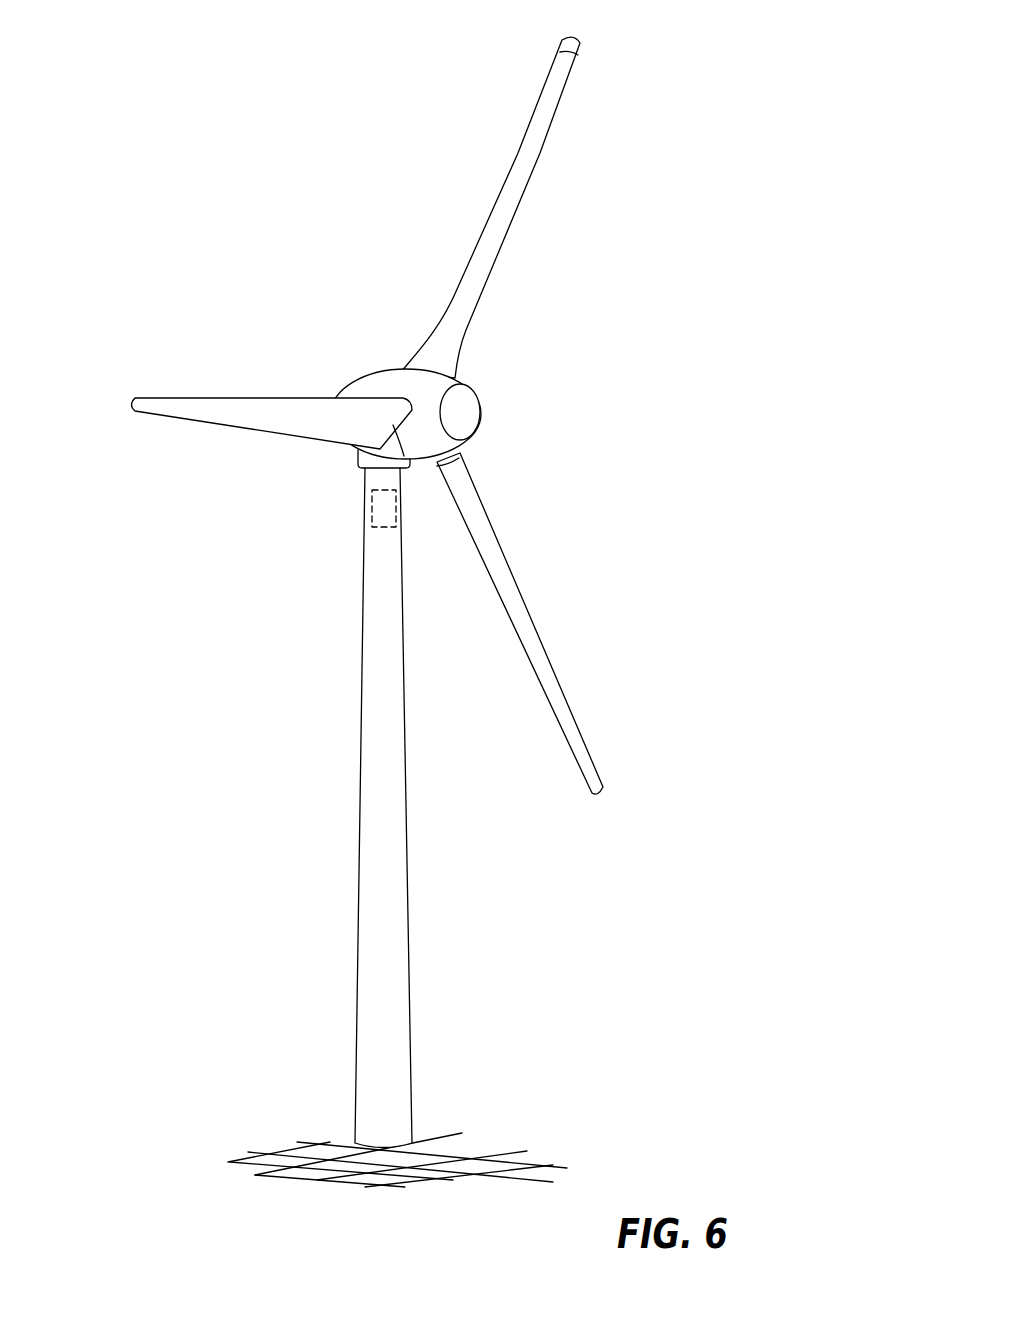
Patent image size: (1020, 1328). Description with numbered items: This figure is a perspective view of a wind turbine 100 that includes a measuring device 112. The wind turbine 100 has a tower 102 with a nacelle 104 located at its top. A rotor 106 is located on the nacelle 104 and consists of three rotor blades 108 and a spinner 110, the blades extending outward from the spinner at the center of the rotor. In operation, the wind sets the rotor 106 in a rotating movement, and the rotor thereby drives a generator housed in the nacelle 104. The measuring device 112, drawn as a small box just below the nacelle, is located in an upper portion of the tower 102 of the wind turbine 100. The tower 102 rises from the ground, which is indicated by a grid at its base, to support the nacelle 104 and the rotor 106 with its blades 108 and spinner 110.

The wind turbine 100 is at (434, 607).
The tower 102 is at (390, 908).
The nacelle 104 is at (378, 385).
The rotor 106 is at (434, 411).
The rotor blades 108 is at (520, 167).
The spinner 110 is at (463, 410).
The measuring device 112 is at (371, 503).